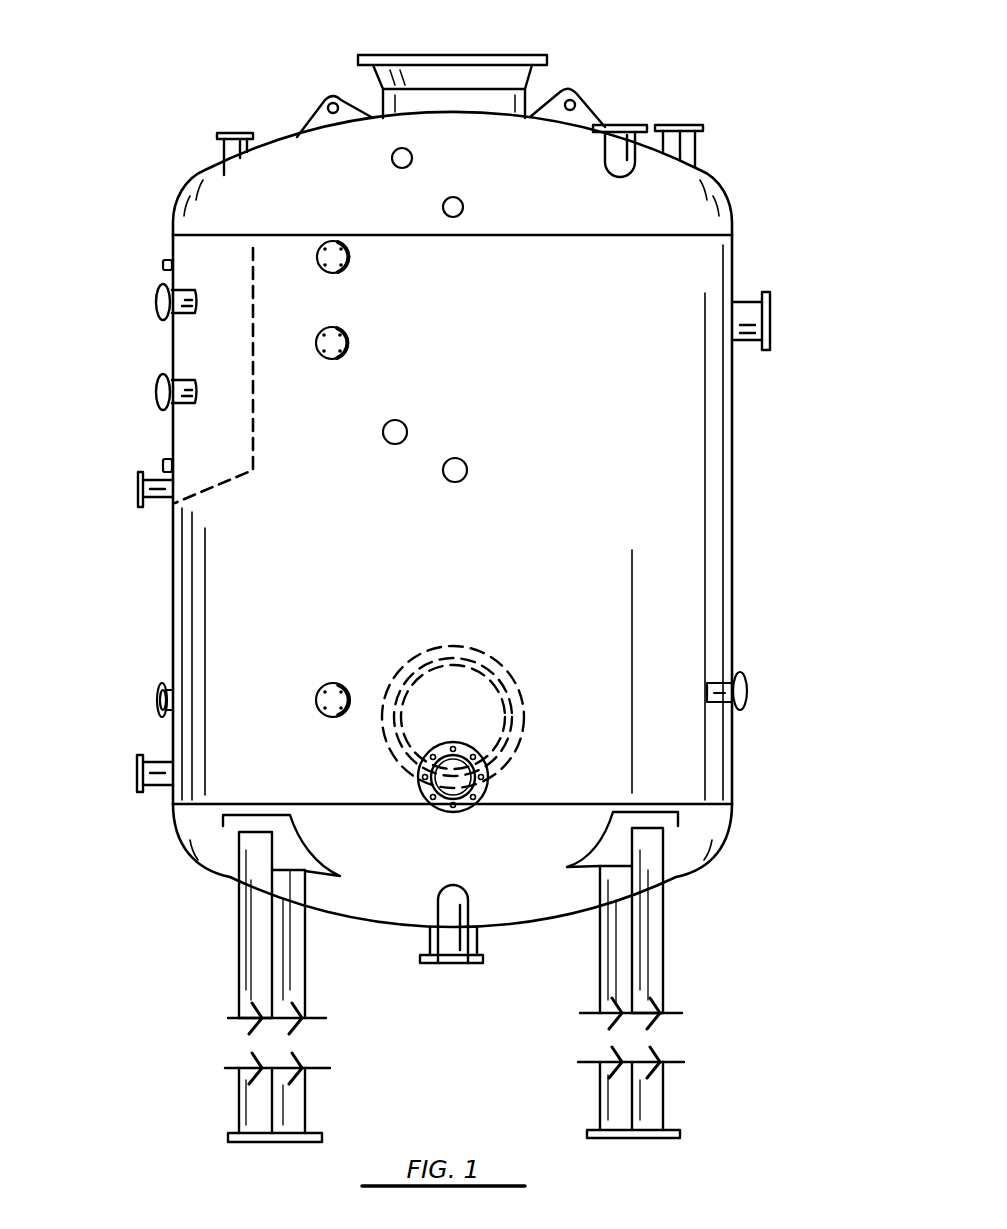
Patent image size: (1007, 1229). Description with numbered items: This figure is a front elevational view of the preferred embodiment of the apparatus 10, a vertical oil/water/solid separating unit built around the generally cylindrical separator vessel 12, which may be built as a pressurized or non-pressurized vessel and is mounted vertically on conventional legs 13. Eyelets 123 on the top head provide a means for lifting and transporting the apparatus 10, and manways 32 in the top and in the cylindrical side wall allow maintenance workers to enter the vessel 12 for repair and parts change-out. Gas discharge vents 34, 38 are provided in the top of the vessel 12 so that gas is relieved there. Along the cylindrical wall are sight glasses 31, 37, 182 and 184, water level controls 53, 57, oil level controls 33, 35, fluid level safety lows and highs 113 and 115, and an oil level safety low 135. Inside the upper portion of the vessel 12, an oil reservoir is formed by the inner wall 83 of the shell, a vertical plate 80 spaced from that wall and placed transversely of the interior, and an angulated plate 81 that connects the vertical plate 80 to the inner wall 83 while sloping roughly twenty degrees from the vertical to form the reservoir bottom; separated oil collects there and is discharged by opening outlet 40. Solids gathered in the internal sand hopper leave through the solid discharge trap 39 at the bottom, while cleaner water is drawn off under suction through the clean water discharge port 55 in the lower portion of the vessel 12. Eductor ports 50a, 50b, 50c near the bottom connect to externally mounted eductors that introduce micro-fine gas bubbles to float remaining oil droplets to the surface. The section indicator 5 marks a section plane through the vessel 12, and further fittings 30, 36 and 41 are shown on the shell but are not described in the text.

The section line 5- 5 is at (65, 203).
The apparatus 10 is at (656, 56).
The separator vessel 12 is at (733, 492).
The legs 13 is at (306, 970).
The side nozzle 30 is at (771, 305).
The sight glass 31 is at (163, 262).
The manway 32 is at (485, 55).
The oil level control 33 is at (157, 302).
The gas discharge vent 34 is at (240, 133).
The oil level control 35 is at (157, 392).
The top nozzle 36 is at (630, 125).
The sight glass 37 is at (163, 464).
The gas discharge vent 38 is at (700, 125).
The solid discharge trap 39 is at (467, 965).
The oil discharge outlet 40 is at (138, 490).
The lower side nozzle 41 is at (137, 772).
The eductor port 50a is at (748, 683).
The eductor port 50b is at (375, 672).
The eductor port 50c is at (160, 692).
The water level control 53 is at (347, 270).
The clean water discharge port 55 is at (473, 812).
The water level control 57 is at (349, 352).
The vertical plate 80 is at (257, 426).
The angulated plate 81 is at (220, 490).
The inner wall 83 is at (175, 350).
The fluid level safety low/high 113 is at (403, 423).
The fluid level safety low/high 115 is at (412, 154).
The eyelet 123 is at (333, 93).
The oil level safety low 135 is at (178, 404).
The sight glass 182 is at (463, 206).
The sight glass 184 is at (466, 462).